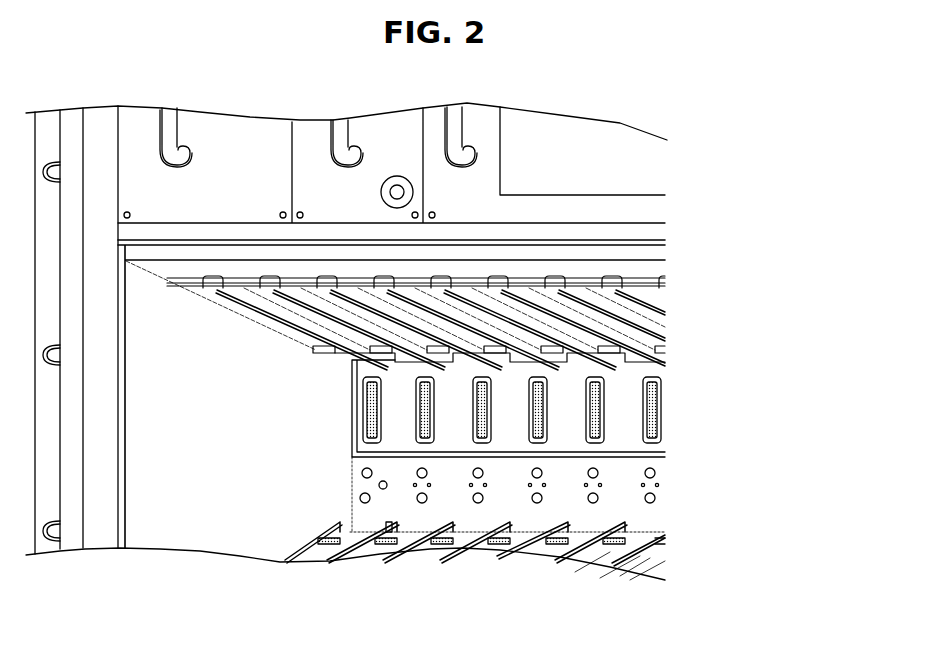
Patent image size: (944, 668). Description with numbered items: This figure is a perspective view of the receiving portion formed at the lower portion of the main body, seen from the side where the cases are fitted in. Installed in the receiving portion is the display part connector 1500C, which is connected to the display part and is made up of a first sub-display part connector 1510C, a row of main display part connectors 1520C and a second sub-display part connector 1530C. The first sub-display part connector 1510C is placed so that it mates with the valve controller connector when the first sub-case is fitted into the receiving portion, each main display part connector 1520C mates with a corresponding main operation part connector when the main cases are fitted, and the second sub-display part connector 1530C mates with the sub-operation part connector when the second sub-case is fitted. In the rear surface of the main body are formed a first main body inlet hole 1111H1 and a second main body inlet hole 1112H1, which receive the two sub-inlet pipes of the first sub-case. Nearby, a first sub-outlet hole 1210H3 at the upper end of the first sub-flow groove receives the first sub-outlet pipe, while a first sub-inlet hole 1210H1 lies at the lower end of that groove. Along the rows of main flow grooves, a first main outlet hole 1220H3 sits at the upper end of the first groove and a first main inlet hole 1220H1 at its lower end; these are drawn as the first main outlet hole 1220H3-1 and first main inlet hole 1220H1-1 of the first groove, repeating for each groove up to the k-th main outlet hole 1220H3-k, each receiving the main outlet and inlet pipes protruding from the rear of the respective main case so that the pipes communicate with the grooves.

The display part connector 1500C is at (760, 155).
The first sub-display part connector 1510C is at (365, 397).
The main display part connector 1520C is at (654, 409).
The second sub-display part connector 1530C is at (595, 351).
The first main outlet hole 1220H3 is at (733, 270).
The k-th main outlet hole 1220H3-k is at (717, 512).
The first main outlet hole 1220H3-1 is at (482, 640).
The 1-2nd main body inlet hole 1112H1 is at (361, 473).
The 1-1st main body inlet hole 1111H1 is at (359, 498).
The first sub-inlet hole 1210H1 is at (384, 490).
The first sub-outlet hole 1210H3 is at (389, 524).
The first main inlet hole 1220H1 is at (633, 600).
The first main inlet hole 1220H1-1 is at (482, 502).